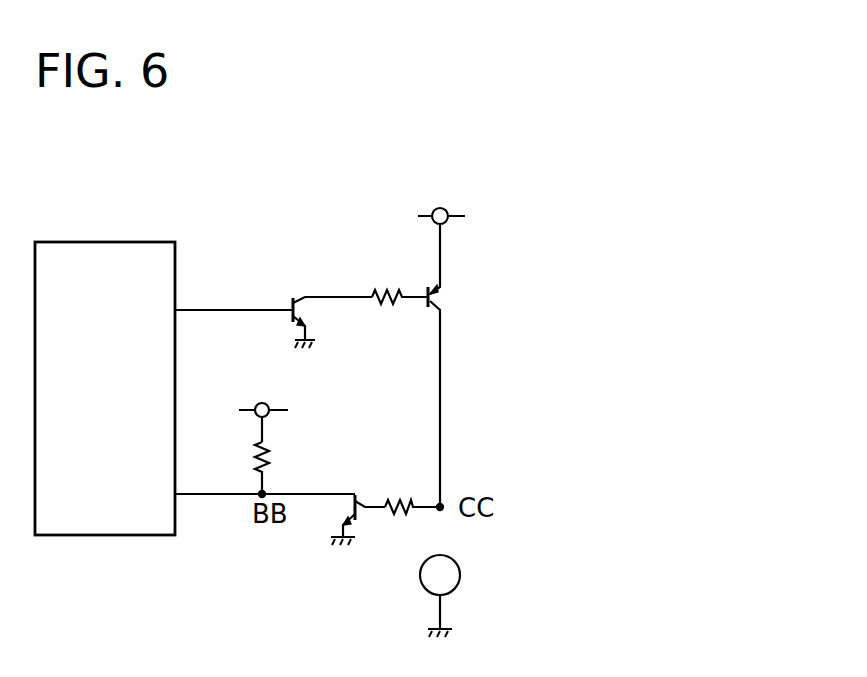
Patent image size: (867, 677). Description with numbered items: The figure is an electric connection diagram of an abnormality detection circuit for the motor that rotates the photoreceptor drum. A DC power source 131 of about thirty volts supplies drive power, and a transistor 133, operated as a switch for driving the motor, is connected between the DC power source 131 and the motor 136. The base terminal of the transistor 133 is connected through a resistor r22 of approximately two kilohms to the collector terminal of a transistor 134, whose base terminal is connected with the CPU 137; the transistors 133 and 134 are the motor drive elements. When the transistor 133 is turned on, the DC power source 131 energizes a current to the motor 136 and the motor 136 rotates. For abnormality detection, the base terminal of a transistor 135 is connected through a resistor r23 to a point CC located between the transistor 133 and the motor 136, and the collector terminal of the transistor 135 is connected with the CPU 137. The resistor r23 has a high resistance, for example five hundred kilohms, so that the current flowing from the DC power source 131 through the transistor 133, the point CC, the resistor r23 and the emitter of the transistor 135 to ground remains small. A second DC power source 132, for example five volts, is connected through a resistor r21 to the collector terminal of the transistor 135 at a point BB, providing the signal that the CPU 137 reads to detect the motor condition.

The DC power source 131 is at (445, 210).
The DC power source 132 is at (255, 405).
The transistor 133 is at (432, 305).
The transistor 134 is at (298, 298).
The transistor 135 is at (353, 497).
The motor 136 is at (460, 562).
The CPU 137 is at (140, 250).
The resistor r21 is at (289, 468).
The resistor r22 is at (400, 279).
The resistor r23 is at (411, 489).